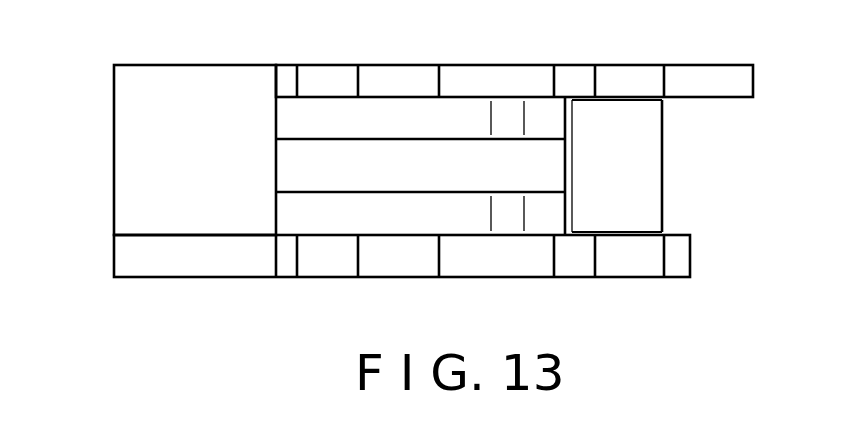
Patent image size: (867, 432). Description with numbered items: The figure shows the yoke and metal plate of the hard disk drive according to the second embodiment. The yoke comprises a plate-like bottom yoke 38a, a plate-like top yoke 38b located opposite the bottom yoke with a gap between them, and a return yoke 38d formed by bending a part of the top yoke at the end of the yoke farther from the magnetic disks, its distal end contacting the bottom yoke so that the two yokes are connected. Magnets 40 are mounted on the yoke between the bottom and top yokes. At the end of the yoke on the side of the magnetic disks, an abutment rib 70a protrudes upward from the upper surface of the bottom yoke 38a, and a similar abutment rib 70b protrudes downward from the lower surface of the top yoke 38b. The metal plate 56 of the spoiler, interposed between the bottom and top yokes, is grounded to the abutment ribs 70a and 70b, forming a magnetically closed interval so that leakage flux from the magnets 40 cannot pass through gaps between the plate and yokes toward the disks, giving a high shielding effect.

The bottom yoke 38a is at (393, 277).
The top yoke 38b is at (396, 70).
The return yoke 38d is at (114, 148).
The magnets 40 is at (315, 199).
The metal plate 56 is at (658, 165).
The abutment rib 70a is at (630, 232).
The abutment rib 70b is at (630, 101).